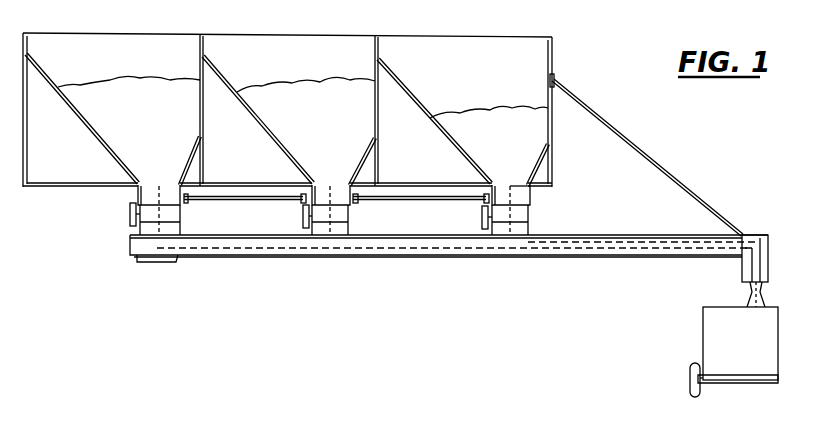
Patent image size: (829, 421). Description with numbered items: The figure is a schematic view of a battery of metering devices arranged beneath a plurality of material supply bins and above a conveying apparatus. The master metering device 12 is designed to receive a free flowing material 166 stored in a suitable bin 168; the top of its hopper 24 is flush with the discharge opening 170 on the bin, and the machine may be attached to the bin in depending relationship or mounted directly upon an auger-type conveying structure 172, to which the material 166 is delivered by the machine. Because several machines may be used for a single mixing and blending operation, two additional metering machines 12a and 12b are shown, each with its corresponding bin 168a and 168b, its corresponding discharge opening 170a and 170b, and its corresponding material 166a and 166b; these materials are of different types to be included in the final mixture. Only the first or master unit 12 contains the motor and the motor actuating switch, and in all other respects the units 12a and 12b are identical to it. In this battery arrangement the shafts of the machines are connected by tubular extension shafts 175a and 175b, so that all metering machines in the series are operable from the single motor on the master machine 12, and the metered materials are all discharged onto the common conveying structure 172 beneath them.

The bin 168b is at (88, 33).
The bin 168a is at (265, 35).
The bin 168 is at (553, 52).
The material 166b is at (165, 57).
The material 166a is at (345, 62).
The free flowing material 166 is at (497, 106).
The discharge opening 170b is at (151, 184).
The discharge opening 170a is at (326, 184).
The discharge opening 170 is at (504, 184).
The hopper 24 is at (525, 177).
The metering machine 12b is at (121, 218).
The metering machine 12a is at (300, 213).
The metering device 12 is at (480, 213).
The tubular extension shaft 175b is at (238, 202).
The tubular extension shaft 175a is at (403, 202).
The auger-type conveying structure 172 is at (522, 258).